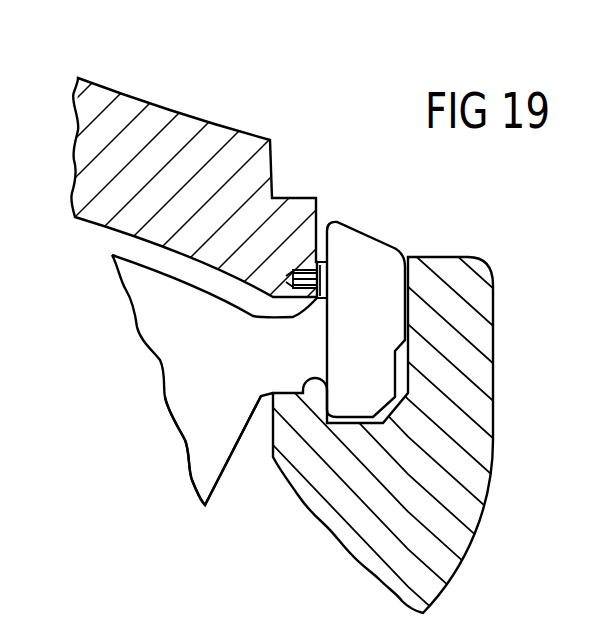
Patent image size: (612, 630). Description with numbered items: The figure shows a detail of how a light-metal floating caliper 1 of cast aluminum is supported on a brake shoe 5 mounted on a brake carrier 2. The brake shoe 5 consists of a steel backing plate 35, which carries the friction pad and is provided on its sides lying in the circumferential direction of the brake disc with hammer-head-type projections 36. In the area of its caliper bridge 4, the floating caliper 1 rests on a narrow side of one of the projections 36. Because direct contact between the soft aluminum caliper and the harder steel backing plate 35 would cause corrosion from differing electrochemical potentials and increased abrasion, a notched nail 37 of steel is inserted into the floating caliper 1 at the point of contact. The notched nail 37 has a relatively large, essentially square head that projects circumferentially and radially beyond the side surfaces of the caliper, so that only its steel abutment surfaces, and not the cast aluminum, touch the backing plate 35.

The floating caliper 1 is at (165, 88).
The brake carrier 2 is at (344, 545).
The caliper bridge 4 is at (215, 140).
The brake shoe 5 is at (143, 345).
The backing plate 35 is at (208, 397).
The hammer-head-type projections 36 is at (378, 272).
The notched nail 37 is at (298, 272).